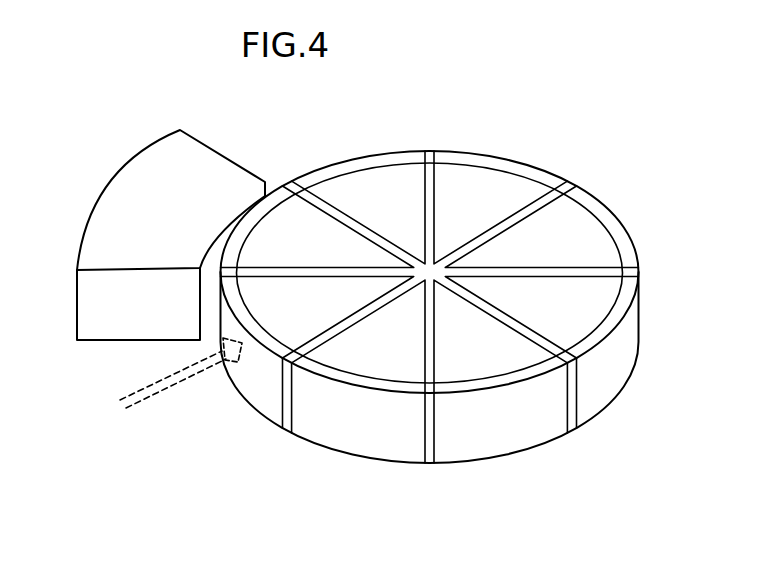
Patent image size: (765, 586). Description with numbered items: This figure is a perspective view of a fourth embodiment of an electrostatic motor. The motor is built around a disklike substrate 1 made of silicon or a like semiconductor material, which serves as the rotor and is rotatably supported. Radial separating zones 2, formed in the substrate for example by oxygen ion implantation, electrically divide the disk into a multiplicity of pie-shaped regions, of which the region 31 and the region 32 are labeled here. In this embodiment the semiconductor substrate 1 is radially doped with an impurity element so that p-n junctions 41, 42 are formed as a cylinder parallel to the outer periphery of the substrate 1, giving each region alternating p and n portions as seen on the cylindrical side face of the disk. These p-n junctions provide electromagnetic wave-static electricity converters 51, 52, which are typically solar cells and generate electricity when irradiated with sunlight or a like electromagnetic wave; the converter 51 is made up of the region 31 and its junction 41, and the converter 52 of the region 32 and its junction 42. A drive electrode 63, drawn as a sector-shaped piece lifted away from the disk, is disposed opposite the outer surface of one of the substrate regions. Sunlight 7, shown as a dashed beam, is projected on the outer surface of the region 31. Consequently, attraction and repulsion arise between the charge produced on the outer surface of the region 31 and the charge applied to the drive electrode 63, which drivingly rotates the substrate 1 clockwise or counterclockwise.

The disklike substrate 1 is at (619, 212).
The radial separating zones 2 is at (431, 153).
The sunlight 7 is at (157, 382).
The region 31 is at (291, 330).
The p-n junction 41 is at (238, 323).
The electromagnetic wave-static electricity converter 51 is at (171, 445).
The region 32 is at (382, 366).
The p-n junction 42 is at (340, 371).
The electromagnetic wave-static electricity converter 52 is at (280, 517).
The drive electrode 63 is at (205, 163).